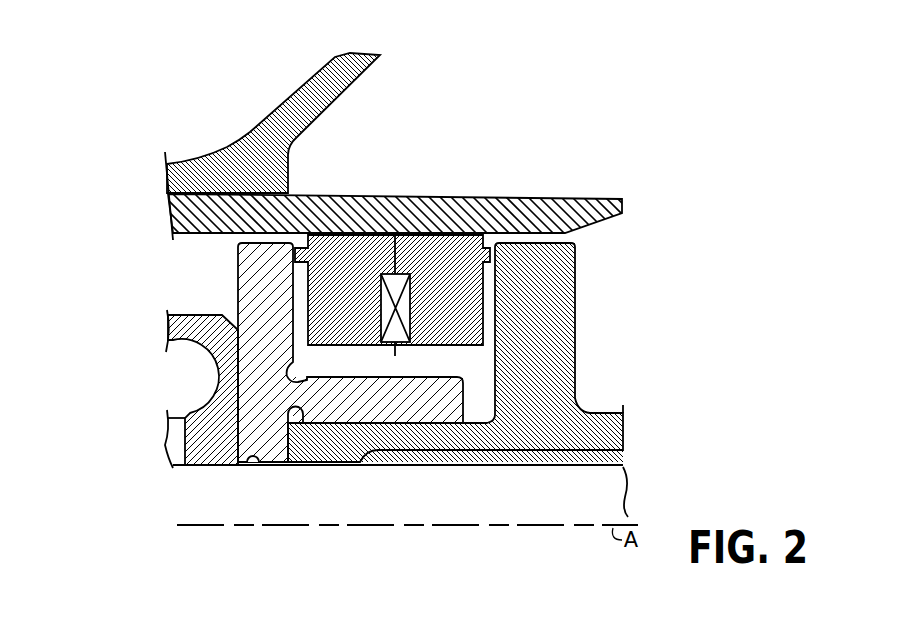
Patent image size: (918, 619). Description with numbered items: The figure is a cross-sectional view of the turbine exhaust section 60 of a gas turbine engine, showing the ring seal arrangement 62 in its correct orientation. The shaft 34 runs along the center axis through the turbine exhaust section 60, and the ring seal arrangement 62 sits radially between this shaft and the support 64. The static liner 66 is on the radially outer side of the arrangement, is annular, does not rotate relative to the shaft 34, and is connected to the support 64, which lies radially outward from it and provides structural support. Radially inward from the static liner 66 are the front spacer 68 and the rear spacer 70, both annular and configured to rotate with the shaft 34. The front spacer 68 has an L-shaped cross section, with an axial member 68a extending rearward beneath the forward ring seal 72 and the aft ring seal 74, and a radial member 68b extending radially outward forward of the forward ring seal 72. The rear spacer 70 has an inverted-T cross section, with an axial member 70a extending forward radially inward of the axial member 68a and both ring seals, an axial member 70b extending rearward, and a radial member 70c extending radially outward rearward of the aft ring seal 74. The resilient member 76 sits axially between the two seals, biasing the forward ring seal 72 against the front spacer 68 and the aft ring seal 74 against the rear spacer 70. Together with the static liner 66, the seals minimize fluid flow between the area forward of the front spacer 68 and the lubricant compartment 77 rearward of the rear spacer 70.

The turbine exhaust section 60 is at (72, 116).
The ring seal arrangement 62 is at (483, 137).
The support 64 is at (247, 160).
The static liner 66 is at (492, 222).
The forward ring seal 72 is at (340, 268).
The aft ring seal 74 is at (428, 268).
The resilient member 76 is at (395, 356).
The front spacer 68 is at (250, 287).
The axial member 68a is at (337, 400).
The radial member 68b is at (213, 370).
The rear spacer 70 is at (545, 355).
The axial member 70a is at (458, 435).
The axial member 70b is at (602, 430).
The radial member 70c is at (548, 311).
The lubricant compartment 77 is at (640, 279).
The shaft 34 is at (195, 495).